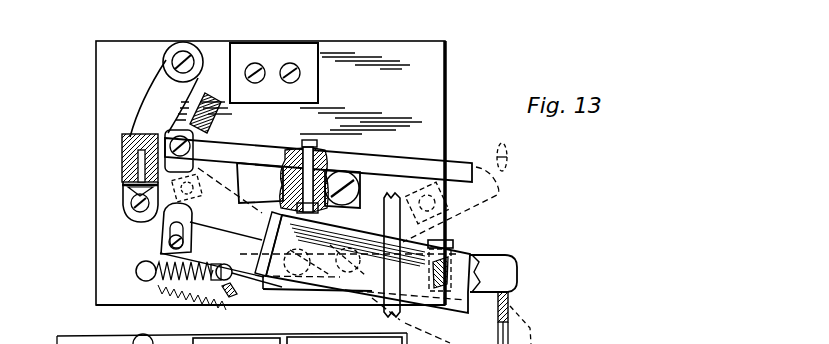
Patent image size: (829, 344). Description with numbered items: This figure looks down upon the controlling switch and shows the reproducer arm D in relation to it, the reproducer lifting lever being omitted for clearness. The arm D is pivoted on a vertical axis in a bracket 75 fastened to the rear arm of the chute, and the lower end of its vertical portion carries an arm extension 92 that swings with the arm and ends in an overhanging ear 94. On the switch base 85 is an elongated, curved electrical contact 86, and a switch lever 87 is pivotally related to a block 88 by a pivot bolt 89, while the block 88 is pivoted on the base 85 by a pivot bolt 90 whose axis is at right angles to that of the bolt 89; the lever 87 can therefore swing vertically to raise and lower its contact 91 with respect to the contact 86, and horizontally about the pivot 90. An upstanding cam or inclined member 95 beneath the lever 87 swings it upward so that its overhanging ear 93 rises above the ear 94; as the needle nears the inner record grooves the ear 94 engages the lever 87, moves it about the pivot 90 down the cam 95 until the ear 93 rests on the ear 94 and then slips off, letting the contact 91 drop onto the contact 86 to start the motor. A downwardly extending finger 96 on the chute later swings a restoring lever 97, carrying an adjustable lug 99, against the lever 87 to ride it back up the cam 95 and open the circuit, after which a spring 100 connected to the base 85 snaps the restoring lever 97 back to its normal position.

The switch base 85 is at (447, 80).
The electrical contact 86 is at (155, 86).
The switch lever 87 is at (250, 152).
The block 88 is at (260, 183).
The pivot bolt 89 is at (327, 163).
The pivot bolt 90 is at (356, 193).
The contact 91 is at (127, 158).
The arm extension 92 is at (221, 254).
The overhanging clip or ear 93 is at (130, 195).
The overhanging ear 94 is at (164, 222).
The cam or inclined member 95 is at (216, 119).
The finger 96 is at (508, 157).
The restoring lever 97 is at (503, 266).
The adjustable lug 99 is at (454, 244).
The spring 100 is at (174, 288).
The bracket 75 is at (334, 255).
The arm D is at (325, 308).